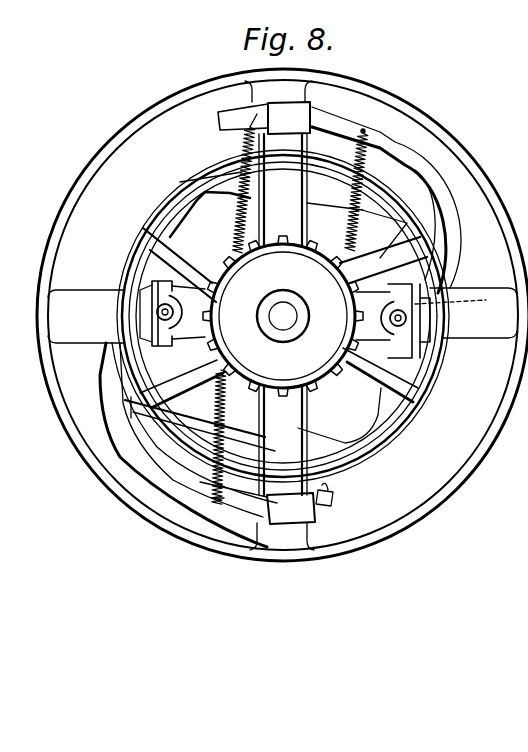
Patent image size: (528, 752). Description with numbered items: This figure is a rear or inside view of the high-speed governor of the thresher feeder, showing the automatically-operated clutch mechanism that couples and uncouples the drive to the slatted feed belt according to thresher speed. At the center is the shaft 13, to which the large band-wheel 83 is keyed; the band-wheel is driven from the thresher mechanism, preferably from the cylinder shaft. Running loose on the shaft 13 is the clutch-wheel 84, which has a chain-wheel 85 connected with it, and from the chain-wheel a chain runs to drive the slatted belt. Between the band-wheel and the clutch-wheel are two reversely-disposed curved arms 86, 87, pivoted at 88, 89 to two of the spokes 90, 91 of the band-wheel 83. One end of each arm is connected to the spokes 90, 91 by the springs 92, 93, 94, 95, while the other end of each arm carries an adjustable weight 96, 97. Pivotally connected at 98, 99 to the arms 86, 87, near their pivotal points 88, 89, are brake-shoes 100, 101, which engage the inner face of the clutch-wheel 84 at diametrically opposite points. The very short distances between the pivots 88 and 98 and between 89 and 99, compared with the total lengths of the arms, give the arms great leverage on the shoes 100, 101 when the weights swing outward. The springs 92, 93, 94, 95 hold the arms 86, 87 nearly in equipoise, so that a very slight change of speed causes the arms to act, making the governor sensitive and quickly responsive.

The shaft 13 is at (283, 306).
The band-wheel 83 is at (113, 497).
The clutch-wheel 84 is at (165, 230).
The chain-wheel 85 is at (283, 316).
The curved arm 86 is at (103, 425).
The curved arm 87 is at (452, 234).
The pivot 88 is at (160, 312).
The pivot 89 is at (461, 311).
The spoke 90 is at (100, 291).
The spoke 91 is at (477, 334).
The spring 92 is at (358, 395).
The spring 93 is at (230, 183).
The spring 94 is at (356, 197).
The spring 95 is at (217, 431).
The adjustable weight 96 is at (385, 215).
The adjustable weight 97 is at (131, 414).
The pivotal connection 98 is at (178, 310).
The pivotal connection 99 is at (420, 306).
The brake-shoe 100 is at (140, 381).
The brake-shoe 101 is at (430, 288).